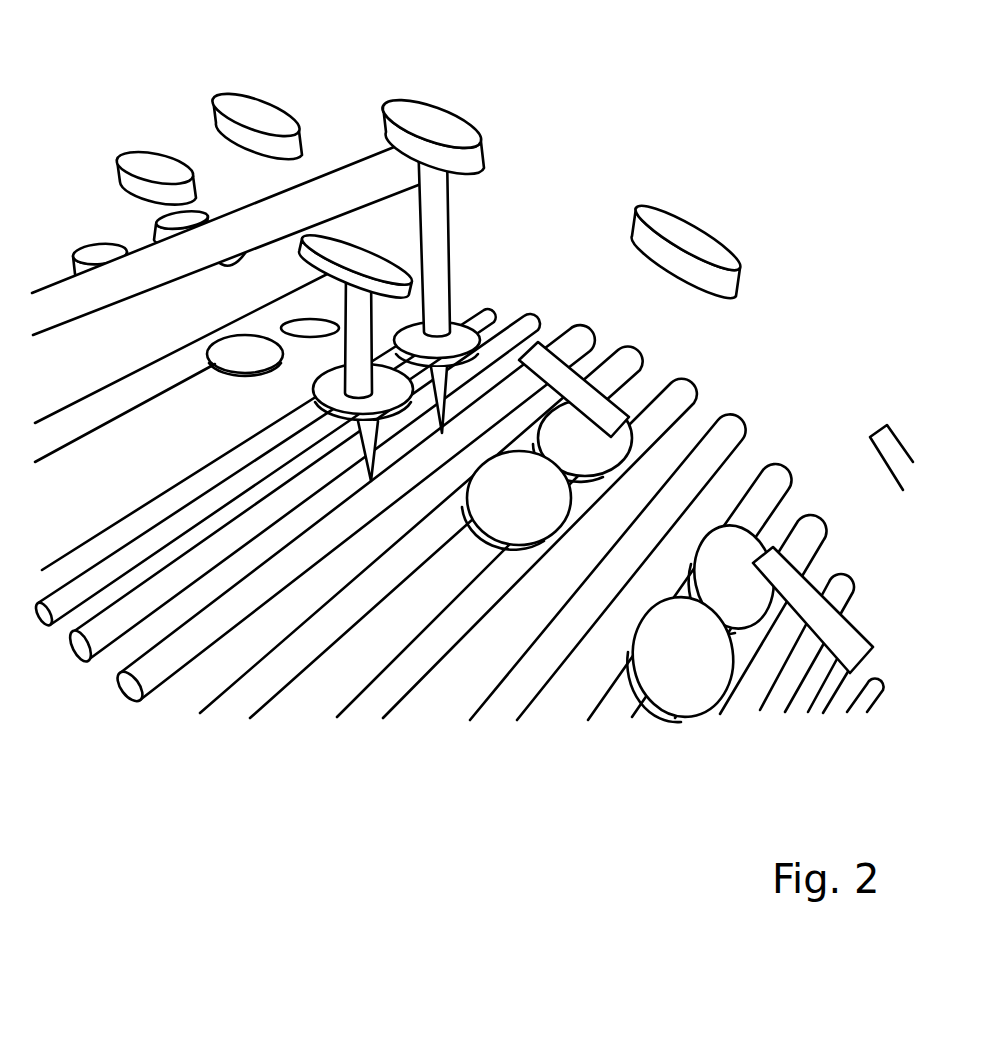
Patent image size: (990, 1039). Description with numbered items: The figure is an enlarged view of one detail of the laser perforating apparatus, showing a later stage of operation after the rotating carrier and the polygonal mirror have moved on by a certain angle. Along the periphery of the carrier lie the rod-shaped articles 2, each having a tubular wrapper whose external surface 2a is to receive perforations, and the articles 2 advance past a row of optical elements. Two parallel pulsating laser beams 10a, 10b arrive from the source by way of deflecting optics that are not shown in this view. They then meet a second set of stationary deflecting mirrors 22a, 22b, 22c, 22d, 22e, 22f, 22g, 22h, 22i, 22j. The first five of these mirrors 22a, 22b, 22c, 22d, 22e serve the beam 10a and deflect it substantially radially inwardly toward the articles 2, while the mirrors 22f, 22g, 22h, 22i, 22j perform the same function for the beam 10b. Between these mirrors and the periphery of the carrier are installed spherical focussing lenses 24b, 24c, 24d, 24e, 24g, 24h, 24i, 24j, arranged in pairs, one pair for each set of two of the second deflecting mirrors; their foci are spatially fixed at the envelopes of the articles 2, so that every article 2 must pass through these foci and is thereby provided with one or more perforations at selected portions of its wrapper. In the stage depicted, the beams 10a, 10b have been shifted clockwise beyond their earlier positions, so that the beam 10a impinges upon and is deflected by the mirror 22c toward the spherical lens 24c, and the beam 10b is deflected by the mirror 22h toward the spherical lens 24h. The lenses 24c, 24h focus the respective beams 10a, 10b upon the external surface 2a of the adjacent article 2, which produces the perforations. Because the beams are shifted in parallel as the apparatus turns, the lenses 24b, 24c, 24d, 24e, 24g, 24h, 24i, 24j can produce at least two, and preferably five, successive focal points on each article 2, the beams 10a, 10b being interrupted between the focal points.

The article 2 is at (147, 692).
The external surface of article 2a is at (566, 331).
The laser beam 10a is at (95, 420).
The laser beam 10b is at (55, 297).
The second deflecting mirror 22a is at (88, 245).
The second deflecting mirror 22b is at (197, 217).
The second deflecting mirror 22c is at (360, 263).
The second deflecting mirror 22d is at (638, 382).
The second deflecting mirror 22e is at (803, 582).
The second deflecting mirror 22f is at (142, 157).
The second deflecting mirror 22g is at (255, 100).
The second deflecting mirror 22h is at (428, 100).
The second deflecting mirror 22i is at (671, 212).
The second deflecting mirror 22j is at (880, 420).
The spherical focussing lens 24b is at (232, 370).
The spherical focussing lens 24c is at (330, 390).
The spherical focussing lens 24d is at (507, 510).
The spherical focussing lens 24e is at (688, 695).
The spherical focussing lens 24g is at (316, 324).
The spherical focussing lens 24h is at (457, 328).
The spherical focussing lens 24i is at (613, 450).
The spherical focussing lens 24j is at (730, 557).